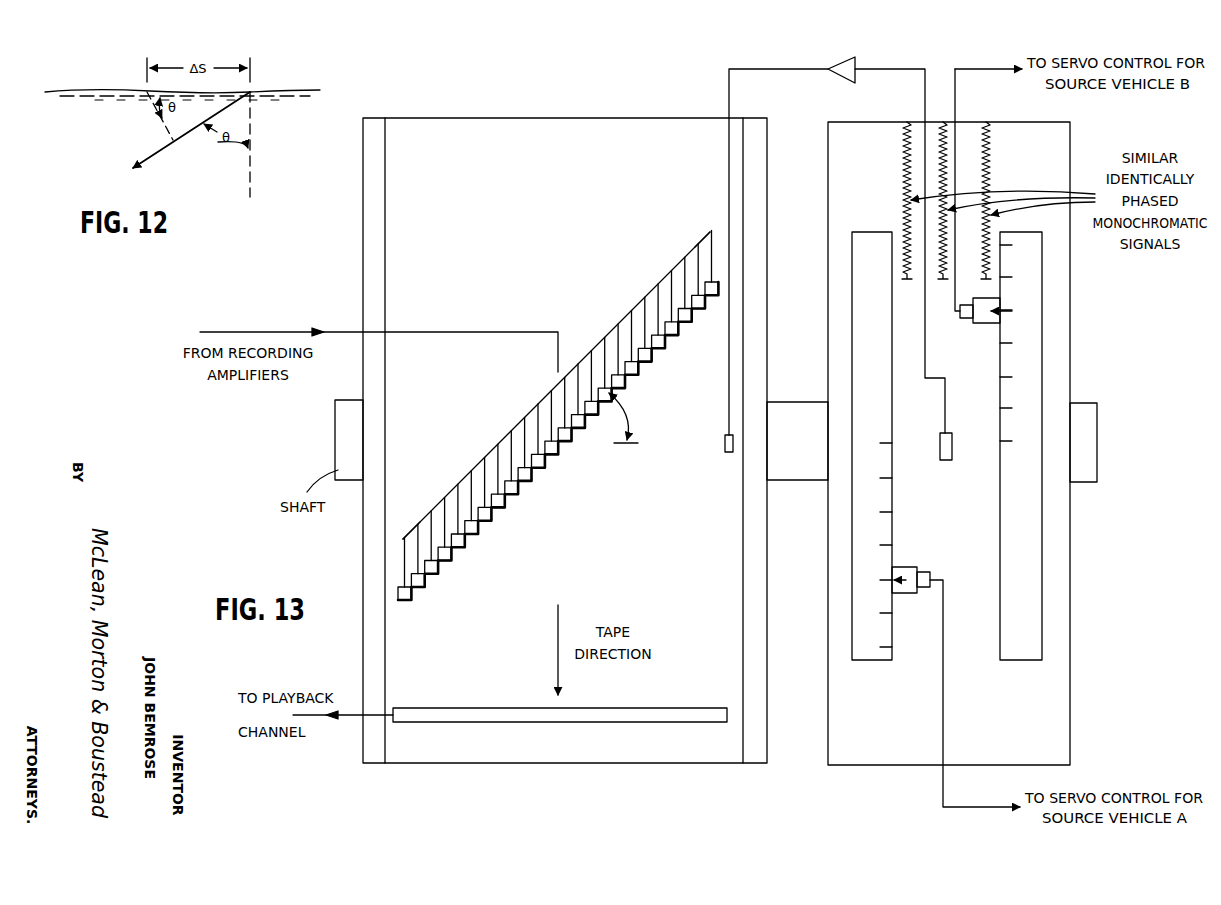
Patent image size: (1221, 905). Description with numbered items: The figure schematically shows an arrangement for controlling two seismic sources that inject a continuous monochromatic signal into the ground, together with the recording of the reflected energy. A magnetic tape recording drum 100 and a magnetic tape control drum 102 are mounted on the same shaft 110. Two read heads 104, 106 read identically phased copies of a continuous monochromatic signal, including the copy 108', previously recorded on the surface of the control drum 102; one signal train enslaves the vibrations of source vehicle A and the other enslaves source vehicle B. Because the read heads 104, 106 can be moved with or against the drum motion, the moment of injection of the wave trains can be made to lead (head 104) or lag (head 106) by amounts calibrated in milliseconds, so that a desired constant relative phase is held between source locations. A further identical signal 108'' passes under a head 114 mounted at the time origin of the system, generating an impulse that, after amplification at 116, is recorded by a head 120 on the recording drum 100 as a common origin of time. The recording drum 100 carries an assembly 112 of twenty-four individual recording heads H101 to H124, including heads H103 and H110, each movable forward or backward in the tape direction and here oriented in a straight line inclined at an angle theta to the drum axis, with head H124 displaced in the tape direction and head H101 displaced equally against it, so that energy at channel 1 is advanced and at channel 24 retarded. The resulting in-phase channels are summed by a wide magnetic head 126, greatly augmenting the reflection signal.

The magnetic tape recording drum 100 is at (509, 116).
The magnetic tape control drum 102 is at (898, 766).
The read head 104 is at (912, 594).
The read head 106 is at (985, 322).
The copy of continuous monochromatic signal 108' is at (944, 200).
The continuous monochromatic signal 108'' is at (915, 185).
The shaft 110 is at (1087, 403).
The assembly of recording heads 112 is at (557, 421).
The head 114 is at (950, 446).
The amplifier 116 is at (835, 78).
The head 120 is at (725, 447).
The wide magnetic head 126 is at (645, 708).
The recording head H101 is at (404, 601).
The recording head H103 is at (437, 571).
The recording head H110 is at (532, 478).
The recording head H124 is at (711, 297).
The channel 24 is at (400, 528).
The channel 1 end of head assembly 1 is at (701, 229).